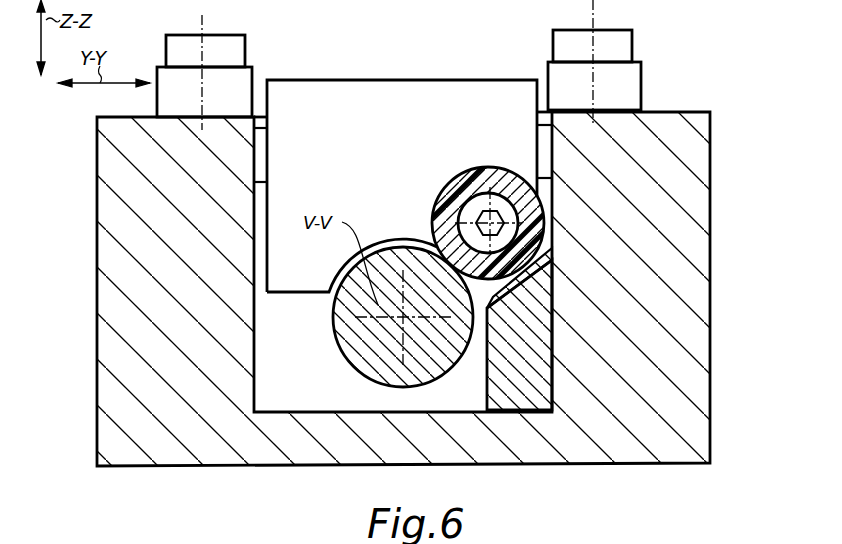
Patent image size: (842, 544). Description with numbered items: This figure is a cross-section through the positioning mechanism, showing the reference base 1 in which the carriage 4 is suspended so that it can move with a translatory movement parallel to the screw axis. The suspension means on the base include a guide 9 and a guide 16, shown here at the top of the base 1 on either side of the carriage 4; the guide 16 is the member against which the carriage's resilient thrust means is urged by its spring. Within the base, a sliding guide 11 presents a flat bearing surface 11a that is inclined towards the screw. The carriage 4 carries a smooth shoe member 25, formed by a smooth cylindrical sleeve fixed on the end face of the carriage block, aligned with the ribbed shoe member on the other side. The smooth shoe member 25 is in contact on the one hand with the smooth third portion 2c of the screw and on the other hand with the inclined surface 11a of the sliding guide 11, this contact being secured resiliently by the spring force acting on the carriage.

The reference base 1 is at (700, 217).
The third portion of the screw 2c is at (370, 335).
The carriage 4 is at (410, 98).
The guide 9 is at (233, 80).
The sliding guide 11 is at (537, 373).
The flat bearing surface 11a is at (495, 297).
The guide 16 is at (627, 80).
The smooth shoe member 25 is at (468, 183).